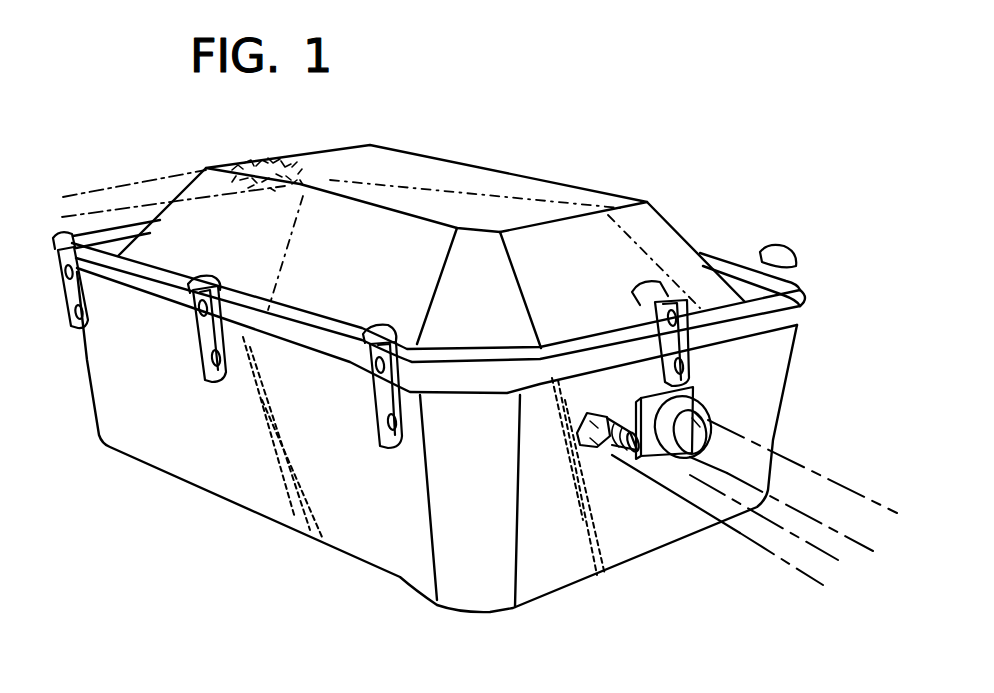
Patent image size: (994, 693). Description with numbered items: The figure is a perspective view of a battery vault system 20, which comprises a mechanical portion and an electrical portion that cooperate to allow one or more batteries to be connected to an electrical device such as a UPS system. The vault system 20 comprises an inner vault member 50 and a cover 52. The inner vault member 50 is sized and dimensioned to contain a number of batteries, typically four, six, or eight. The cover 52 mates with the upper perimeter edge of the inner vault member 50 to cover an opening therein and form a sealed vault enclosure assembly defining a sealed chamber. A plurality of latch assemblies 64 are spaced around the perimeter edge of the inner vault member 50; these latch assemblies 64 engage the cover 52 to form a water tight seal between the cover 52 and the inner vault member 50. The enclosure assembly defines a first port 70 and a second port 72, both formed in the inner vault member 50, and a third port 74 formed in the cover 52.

The battery vault system 20 is at (560, 148).
The inner vault member 50 is at (194, 487).
The cover 52 is at (604, 176).
The latch assemblies 64 is at (802, 248).
The first port 70 is at (718, 403).
The second port 72 is at (602, 455).
The third port 74 is at (255, 157).